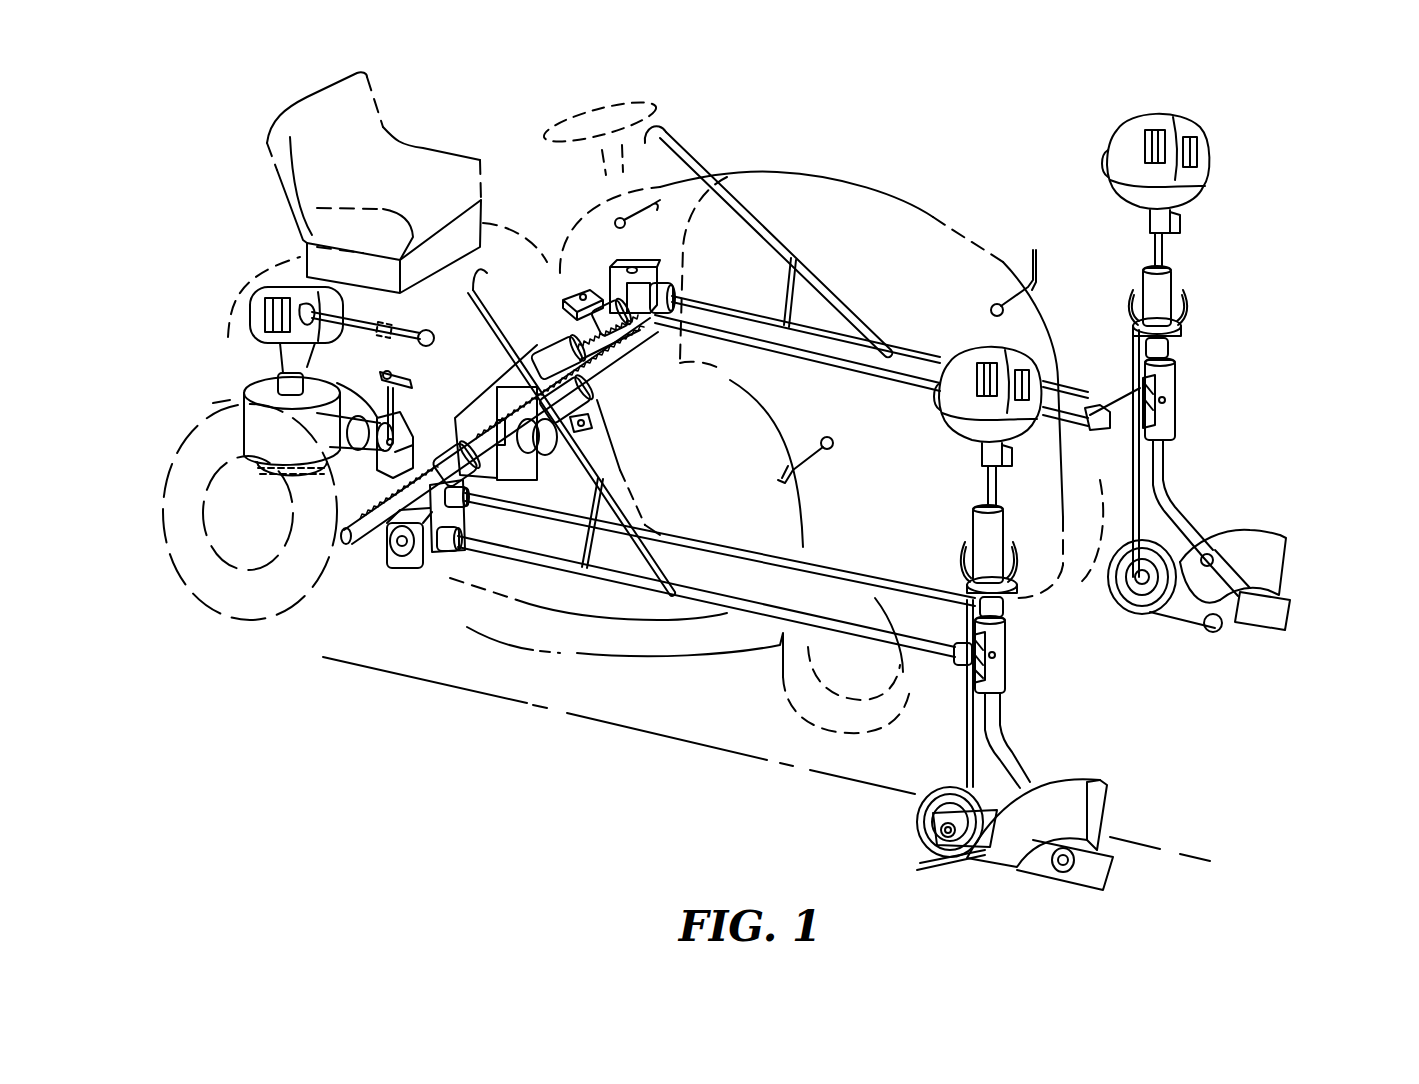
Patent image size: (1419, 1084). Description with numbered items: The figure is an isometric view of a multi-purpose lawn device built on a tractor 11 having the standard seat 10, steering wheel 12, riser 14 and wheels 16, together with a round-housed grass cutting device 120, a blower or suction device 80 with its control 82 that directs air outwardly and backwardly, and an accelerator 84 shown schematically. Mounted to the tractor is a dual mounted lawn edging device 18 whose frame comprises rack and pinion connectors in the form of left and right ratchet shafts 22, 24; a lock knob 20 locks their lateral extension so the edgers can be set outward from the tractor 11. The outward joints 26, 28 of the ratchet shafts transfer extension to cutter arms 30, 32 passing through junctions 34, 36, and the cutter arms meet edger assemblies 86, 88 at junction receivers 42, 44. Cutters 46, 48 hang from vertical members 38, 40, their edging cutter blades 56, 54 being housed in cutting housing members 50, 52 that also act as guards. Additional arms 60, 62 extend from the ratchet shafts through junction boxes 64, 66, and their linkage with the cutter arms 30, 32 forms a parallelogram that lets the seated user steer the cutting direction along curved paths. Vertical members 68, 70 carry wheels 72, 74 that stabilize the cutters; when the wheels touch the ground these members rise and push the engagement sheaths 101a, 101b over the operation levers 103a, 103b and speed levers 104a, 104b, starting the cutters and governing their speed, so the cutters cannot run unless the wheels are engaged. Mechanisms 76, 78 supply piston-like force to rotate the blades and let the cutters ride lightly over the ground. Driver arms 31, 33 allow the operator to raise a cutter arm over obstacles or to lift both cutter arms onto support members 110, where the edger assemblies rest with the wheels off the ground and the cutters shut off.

The seat 10 is at (417, 146).
The tractor 11 is at (850, 165).
The steering wheel 12 is at (622, 106).
The riser 14 is at (275, 270).
The wheels 16 is at (222, 598).
The dual mounted lawn edging device 18 is at (427, 549).
The lock knob 20 is at (546, 445).
The left ratchet shaft 22 is at (378, 507).
The right ratchet shaft 24 is at (632, 357).
The outward joint 26 is at (428, 553).
The outward joint 28 is at (620, 260).
The cutter arm 30 is at (542, 565).
The driver arm 31 is at (493, 306).
The cutter arm 32 is at (733, 306).
The driver arm 33 is at (688, 144).
The junction 34 is at (455, 550).
The junction 36 is at (670, 290).
The vertical member 38 is at (993, 707).
The vertical member 40 is at (1163, 458).
The junction receiver 42 is at (953, 667).
The junction receiver 44 is at (1118, 430).
The cutter 46 is at (1056, 840).
The cutter 48 is at (1263, 587).
The cutting housing member 50 is at (1091, 785).
The cutting housing member 52 is at (1255, 533).
The edging cutter blade 54 is at (1096, 884).
The edging cutter blade 56 is at (1264, 630).
The arm 60 is at (697, 553).
The arm 62 is at (820, 363).
The junction box 64 is at (437, 452).
The junction box 66 is at (572, 285).
The vertical member 68 is at (967, 717).
The vertical member 70 is at (1135, 590).
The wheel 72 is at (917, 827).
The wheel 74 is at (1137, 624).
The mechanism 76 is at (968, 342).
The mechanism 78 is at (1126, 118).
The blower or suction device 80 is at (258, 383).
The control 82 is at (420, 322).
The accelerator 84 is at (616, 213).
The edger assembly 86 is at (1216, 372).
The edger assembly 88 is at (1025, 617).
The engagement sheath 101a is at (1003, 598).
The engagement sheath 101b is at (1180, 325).
The operation lever 103a is at (966, 556).
The operation lever 103b is at (1136, 300).
The speed lever 104a is at (1008, 546).
The speed lever 104b is at (1188, 300).
The support member 110 is at (1008, 293).
The grass cutting device 120 is at (615, 651).